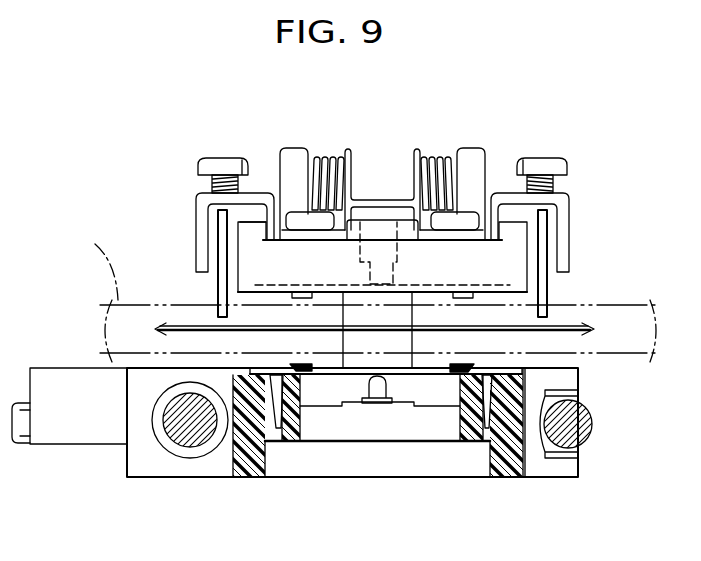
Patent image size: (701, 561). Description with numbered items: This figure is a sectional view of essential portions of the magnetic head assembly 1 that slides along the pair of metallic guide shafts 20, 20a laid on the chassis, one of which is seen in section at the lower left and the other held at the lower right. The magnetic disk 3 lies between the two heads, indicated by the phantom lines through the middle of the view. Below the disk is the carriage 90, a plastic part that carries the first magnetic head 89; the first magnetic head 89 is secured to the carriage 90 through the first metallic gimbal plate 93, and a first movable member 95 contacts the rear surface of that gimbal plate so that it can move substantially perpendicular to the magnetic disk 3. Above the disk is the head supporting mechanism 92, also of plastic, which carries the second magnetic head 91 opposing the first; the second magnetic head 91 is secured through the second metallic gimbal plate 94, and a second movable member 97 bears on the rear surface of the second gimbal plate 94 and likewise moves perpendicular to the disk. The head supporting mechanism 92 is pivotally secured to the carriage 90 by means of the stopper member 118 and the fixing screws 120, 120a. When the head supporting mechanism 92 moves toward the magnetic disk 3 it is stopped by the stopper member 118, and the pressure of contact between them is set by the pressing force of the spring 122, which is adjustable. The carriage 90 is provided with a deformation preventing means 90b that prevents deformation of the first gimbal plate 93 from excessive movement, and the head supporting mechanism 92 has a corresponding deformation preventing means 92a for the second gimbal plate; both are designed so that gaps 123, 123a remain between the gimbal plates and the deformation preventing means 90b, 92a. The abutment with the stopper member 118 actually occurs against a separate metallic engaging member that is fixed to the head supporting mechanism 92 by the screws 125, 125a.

The connector device 1 is at (94, 259).
The magnetic disk 3 is at (580, 327).
The guide shaft 20 is at (183, 438).
The guide shaft 20a is at (593, 420).
The first magnetic head 89 is at (362, 372).
The carriage 90 is at (570, 478).
The deformation preventing means 90b is at (300, 355).
The second magnetic head 91 is at (394, 318).
The head supporting mechanism 92 is at (510, 257).
The deformation preventing means 92a is at (302, 299).
The first gimbal plate 93 is at (425, 405).
The second gimbal plate 94 is at (263, 226).
The first movable member 95 is at (374, 380).
The second movable member 97 is at (365, 290).
The stopper member 118 is at (547, 226).
The fixing screw 120 is at (552, 163).
The fixing screw 120a is at (215, 163).
The spring 122 is at (347, 160).
The gap 123 is at (296, 372).
The gap 123a is at (458, 376).
The screw 125 is at (465, 216).
The screw 125a is at (300, 216).